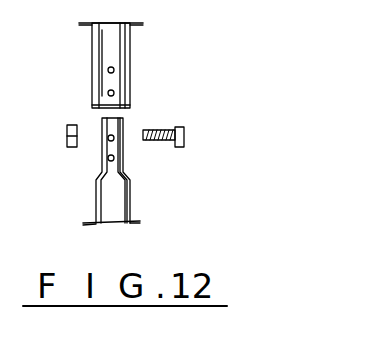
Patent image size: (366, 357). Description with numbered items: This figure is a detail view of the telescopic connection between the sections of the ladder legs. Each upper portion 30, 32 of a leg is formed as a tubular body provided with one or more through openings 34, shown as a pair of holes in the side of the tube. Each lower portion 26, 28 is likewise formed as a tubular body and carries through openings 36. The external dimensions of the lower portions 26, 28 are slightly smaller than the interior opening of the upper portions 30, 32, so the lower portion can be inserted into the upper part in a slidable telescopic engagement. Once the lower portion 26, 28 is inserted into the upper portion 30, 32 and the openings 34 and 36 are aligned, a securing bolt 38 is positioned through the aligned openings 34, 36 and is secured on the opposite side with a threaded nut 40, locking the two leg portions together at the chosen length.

The upper portion 30 is at (157, 56).
The upper portion 32 is at (128, 45).
The through openings 34 is at (114, 93).
The lower portion 26 is at (153, 171).
The lower portion 28 is at (130, 193).
The through openings 36 is at (108, 139).
The securing bolt 38 is at (184, 136).
The threaded nut 40 is at (67, 131).